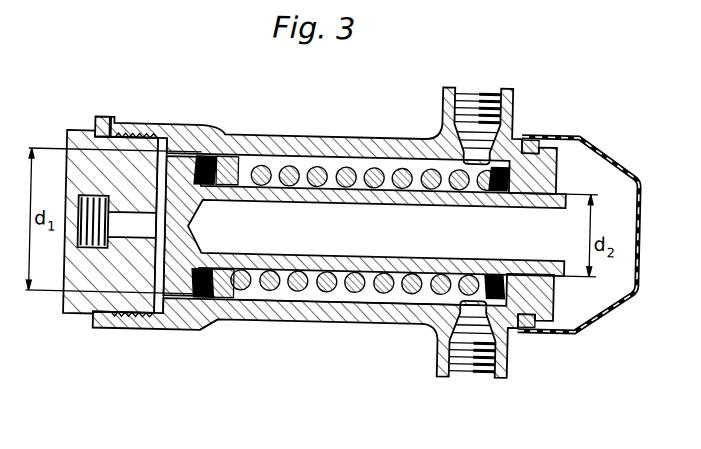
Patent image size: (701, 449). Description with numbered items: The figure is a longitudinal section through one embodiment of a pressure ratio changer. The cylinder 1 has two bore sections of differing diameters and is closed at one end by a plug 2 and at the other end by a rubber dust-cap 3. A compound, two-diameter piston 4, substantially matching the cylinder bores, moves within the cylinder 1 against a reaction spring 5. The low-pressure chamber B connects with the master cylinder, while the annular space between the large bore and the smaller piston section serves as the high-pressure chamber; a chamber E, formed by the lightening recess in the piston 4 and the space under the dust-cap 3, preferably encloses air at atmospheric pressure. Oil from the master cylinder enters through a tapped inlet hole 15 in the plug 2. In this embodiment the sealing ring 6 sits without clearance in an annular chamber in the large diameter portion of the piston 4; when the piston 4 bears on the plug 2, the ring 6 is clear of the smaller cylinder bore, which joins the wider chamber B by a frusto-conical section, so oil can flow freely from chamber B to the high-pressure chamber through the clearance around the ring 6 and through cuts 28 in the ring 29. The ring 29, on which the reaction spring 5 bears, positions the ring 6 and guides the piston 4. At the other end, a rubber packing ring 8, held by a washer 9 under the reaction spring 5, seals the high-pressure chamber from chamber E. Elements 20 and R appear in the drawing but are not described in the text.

The cylinder 1 is at (382, 152).
The plug 2 is at (72, 139).
The rubber dust-cap 3 is at (617, 161).
The compound piston 4 is at (332, 189).
The reaction spring 5 is at (410, 167).
The sealing ring 6 is at (204, 323).
The rubber packing ring 8 is at (505, 318).
The washer 9 is at (516, 148).
The tapped inlet hole 15 is at (85, 247).
The screw plug 20 is at (461, 92).
The cuts 28 is at (222, 165).
The ring 29 is at (233, 168).
The low-pressure chamber B is at (151, 160).
The chamber E is at (266, 243).
The spring chamber R is at (373, 300).